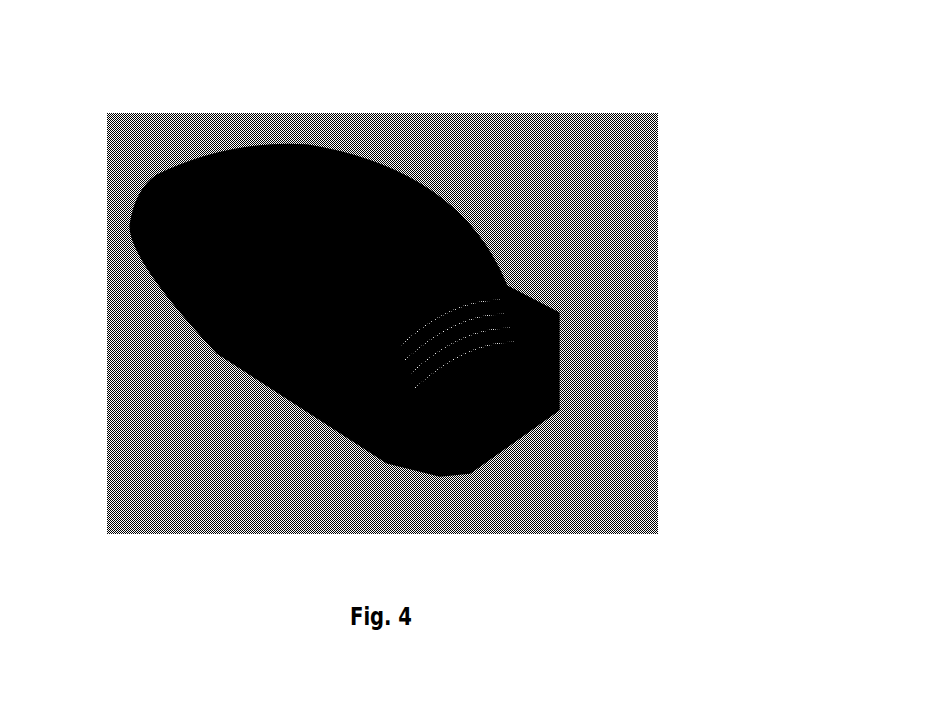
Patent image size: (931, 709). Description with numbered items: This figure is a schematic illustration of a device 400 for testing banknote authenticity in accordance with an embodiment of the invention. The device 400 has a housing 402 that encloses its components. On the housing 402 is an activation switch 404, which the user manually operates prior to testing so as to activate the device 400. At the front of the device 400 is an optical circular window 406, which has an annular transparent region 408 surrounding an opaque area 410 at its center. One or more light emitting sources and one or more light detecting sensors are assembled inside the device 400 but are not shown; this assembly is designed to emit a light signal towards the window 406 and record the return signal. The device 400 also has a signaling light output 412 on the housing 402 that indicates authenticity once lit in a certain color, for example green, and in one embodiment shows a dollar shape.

The device 400 is at (448, 103).
The housing 402 is at (462, 236).
The activation switch 404 is at (272, 393).
The optical circular window 406 is at (555, 432).
The annular transparent region 408 is at (560, 405).
The opaque area 410 is at (537, 410).
The signaling light output 412 is at (233, 195).